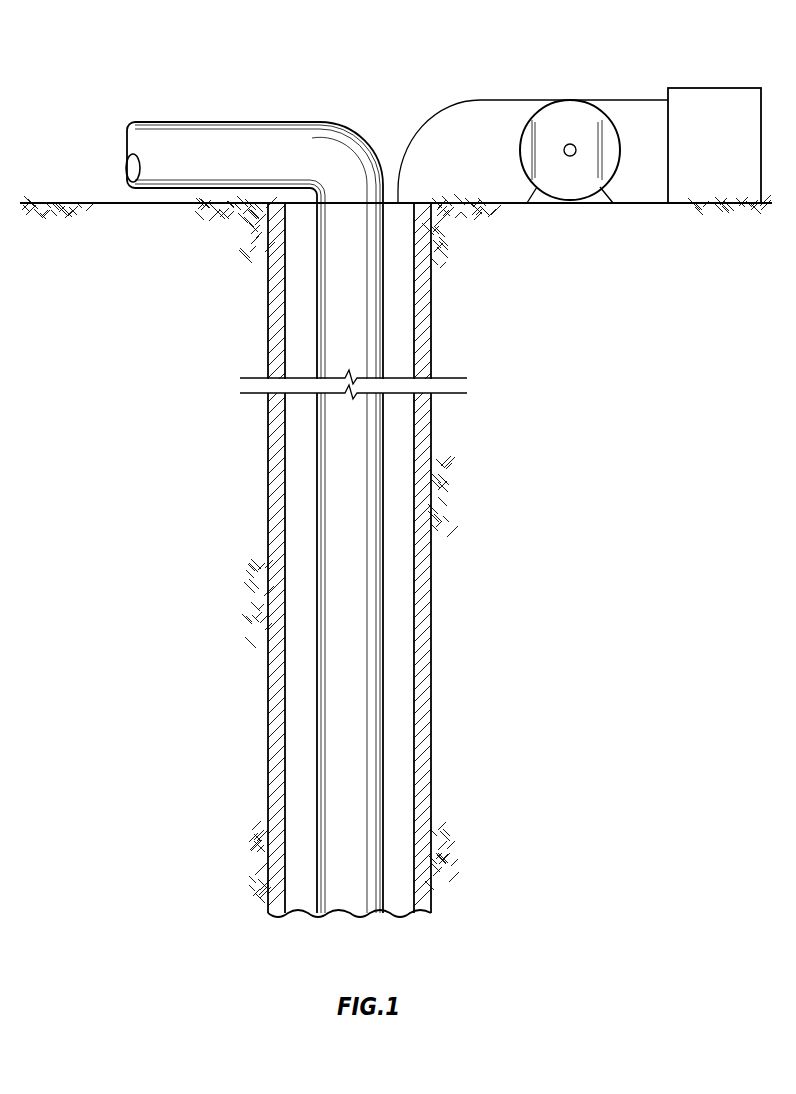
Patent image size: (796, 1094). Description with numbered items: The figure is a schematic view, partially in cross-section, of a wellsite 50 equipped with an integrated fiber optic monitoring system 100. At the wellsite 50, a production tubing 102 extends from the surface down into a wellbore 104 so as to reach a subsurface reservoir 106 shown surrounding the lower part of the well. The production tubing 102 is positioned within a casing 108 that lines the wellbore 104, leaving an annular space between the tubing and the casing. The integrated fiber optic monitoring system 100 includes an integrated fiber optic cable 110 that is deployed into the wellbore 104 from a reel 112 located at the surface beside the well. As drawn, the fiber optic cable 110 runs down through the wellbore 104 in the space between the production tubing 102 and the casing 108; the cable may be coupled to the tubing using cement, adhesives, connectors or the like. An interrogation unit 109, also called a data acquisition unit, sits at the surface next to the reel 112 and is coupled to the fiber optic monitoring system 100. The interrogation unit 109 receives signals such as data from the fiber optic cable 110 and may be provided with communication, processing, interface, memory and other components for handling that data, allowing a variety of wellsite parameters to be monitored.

The wellsite 50 is at (115, 65).
The integrated fiber optic monitoring system 100 is at (466, 70).
The production tubing 102 is at (317, 527).
The wellbore 104 is at (288, 755).
The subsurface reservoir 106 is at (555, 800).
The casing 108 is at (432, 641).
The interrogation unit 109 is at (733, 163).
The integrated fiber optic cable 110 is at (400, 314).
The reel 112 is at (572, 183).